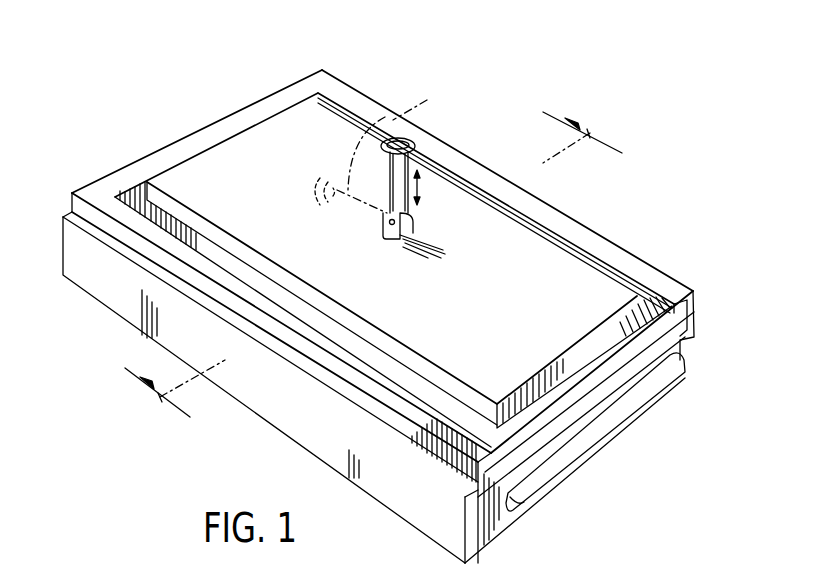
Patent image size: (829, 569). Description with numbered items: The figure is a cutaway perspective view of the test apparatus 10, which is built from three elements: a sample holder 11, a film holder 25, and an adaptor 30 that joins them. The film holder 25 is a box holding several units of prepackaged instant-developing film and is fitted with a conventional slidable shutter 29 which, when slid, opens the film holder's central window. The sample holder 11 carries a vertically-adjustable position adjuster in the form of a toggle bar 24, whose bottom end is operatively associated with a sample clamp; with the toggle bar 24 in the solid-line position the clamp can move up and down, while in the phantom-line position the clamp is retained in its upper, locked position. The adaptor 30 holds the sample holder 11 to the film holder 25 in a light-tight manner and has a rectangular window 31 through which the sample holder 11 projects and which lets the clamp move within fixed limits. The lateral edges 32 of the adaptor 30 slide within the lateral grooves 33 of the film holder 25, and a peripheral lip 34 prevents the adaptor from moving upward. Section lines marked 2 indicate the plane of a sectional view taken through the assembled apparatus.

The test apparatus 10 is at (395, 62).
The sample holder 11 is at (157, 174).
The toggle bar 24 is at (407, 137).
The film holder 25 is at (123, 300).
The slidable shutter 29 is at (647, 378).
The adaptor 30 is at (671, 472).
The rectangular window 31 is at (366, 333).
The lateral edges 32 is at (696, 318).
The lateral grooves 33 is at (694, 312).
The peripheral lip 34 is at (585, 232).
The section line 2- 2 is at (374, 274).